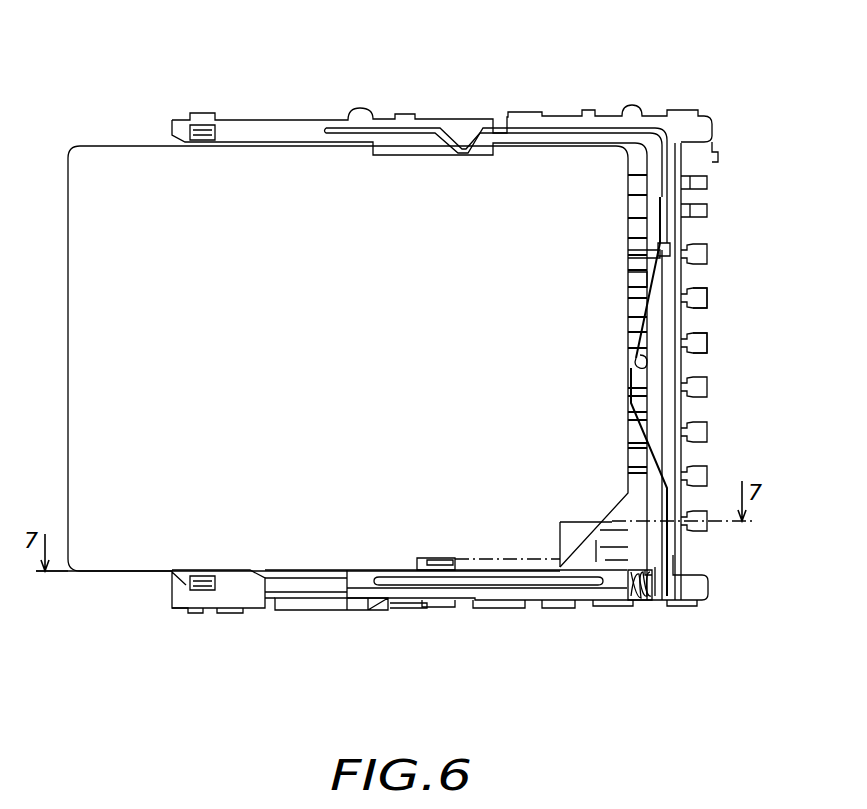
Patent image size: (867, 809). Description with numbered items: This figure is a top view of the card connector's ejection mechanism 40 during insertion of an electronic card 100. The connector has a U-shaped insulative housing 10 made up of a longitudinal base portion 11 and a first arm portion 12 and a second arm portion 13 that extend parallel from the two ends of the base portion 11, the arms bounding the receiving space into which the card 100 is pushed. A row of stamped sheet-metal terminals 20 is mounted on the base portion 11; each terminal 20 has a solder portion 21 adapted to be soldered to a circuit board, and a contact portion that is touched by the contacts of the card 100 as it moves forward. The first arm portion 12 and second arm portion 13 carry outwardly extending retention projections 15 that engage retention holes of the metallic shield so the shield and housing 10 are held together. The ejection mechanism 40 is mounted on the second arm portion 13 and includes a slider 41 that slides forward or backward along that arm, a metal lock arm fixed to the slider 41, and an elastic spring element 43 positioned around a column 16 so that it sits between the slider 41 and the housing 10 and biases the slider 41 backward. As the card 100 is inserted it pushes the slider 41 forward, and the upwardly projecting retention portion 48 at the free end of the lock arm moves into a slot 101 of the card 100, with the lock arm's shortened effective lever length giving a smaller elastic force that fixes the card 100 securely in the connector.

The insulative housing 10 is at (676, 610).
The base portion 11 is at (680, 272).
The first arm portion 12 is at (252, 130).
The second arm portion 13 is at (248, 592).
The retention projection 15 is at (195, 613).
The column 16 is at (638, 603).
The terminal 20 is at (710, 300).
The solder portion 21 is at (708, 348).
The ejection mechanism 40 is at (408, 614).
The slider 41 is at (538, 602).
The elastic spring element 43 is at (660, 590).
The retention portion 48 is at (452, 558).
The electronic card 100 is at (92, 392).
The slot 101 is at (430, 560).